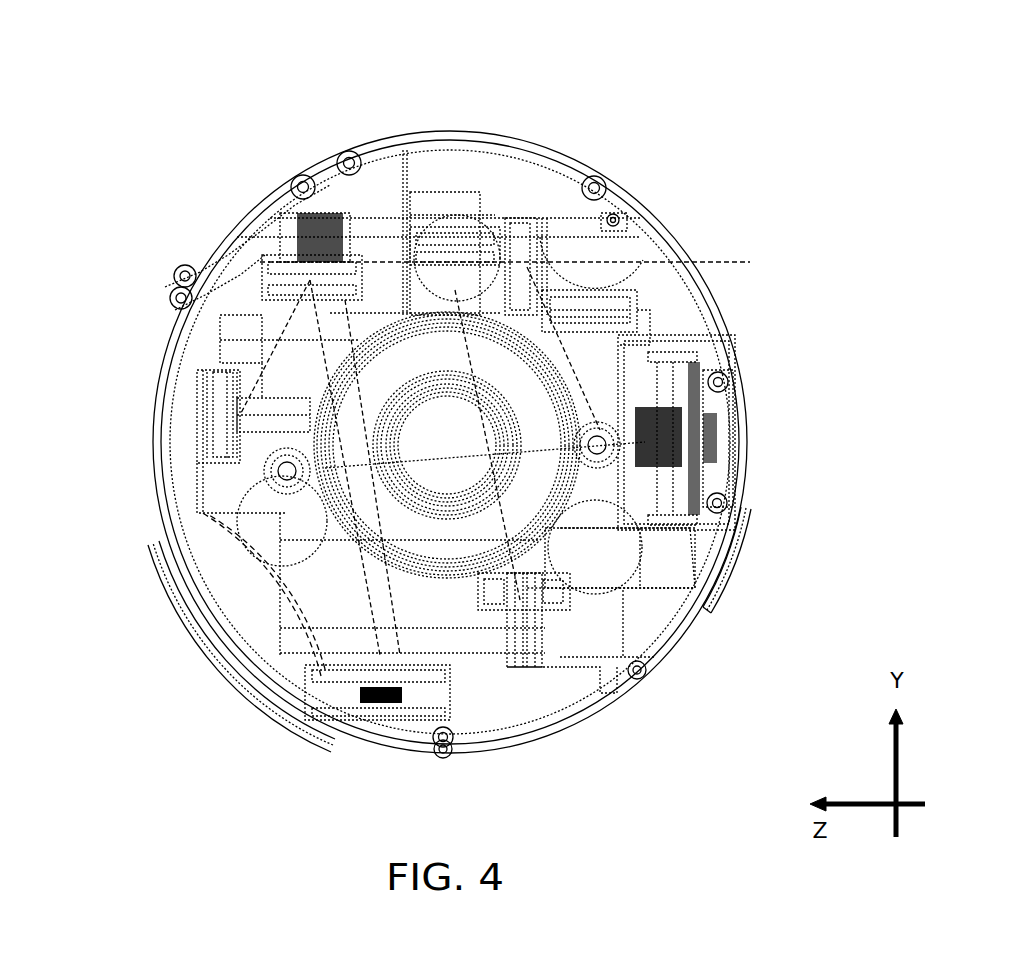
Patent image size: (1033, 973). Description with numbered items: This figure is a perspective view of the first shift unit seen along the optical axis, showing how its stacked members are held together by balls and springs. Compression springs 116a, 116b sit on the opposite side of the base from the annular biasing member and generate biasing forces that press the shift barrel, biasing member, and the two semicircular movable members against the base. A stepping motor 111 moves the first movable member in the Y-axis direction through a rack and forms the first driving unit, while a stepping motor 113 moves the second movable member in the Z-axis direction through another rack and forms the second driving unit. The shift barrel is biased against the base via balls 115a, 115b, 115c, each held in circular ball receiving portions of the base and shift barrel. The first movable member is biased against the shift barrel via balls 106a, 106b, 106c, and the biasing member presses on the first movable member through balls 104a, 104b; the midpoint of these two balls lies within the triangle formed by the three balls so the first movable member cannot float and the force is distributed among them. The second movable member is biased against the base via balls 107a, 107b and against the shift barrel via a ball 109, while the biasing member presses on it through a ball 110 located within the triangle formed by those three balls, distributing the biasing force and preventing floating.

The stepping motor 113 is at (432, 195).
The ball 115c is at (457, 265).
The ball 106a is at (455, 250).
The ball 104b is at (437, 317).
The ball 106b is at (590, 317).
The compression spring 116a is at (600, 445).
The stepping motor 111 is at (670, 553).
The ball 115b is at (593, 547).
The ball 106c is at (300, 437).
The ball 104a is at (498, 350).
The ball 107b is at (410, 697).
The ball 115a is at (287, 520).
The compression spring 116b is at (283, 473).
The ball 109 is at (220, 418).
The ball 110 is at (280, 420).
The ball 107a is at (283, 256).